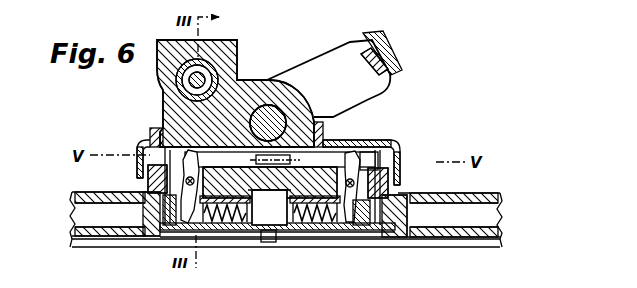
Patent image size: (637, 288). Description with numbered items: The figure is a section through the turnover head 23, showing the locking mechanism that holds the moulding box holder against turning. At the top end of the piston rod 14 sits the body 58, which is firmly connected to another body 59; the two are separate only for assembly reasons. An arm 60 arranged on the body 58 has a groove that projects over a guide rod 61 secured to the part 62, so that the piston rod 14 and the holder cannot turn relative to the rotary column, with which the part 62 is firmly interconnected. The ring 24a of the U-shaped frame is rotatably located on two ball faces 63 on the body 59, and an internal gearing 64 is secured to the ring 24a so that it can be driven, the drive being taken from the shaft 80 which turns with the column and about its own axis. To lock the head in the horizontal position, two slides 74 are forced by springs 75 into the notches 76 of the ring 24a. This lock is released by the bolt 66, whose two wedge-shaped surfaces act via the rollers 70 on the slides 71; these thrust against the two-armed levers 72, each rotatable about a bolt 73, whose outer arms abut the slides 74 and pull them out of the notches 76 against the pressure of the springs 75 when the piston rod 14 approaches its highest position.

The piston rod 14 is at (273, 103).
The turnover head 23 is at (386, 140).
The ring 24a is at (470, 191).
The body 58 is at (312, 98).
The body 59 is at (222, 233).
The arm 60 is at (303, 62).
The guide rod 61 is at (366, 55).
The part 62 is at (374, 33).
The ball faces 63 is at (165, 196).
The internal gearing 64 is at (147, 188).
The bolt 66 is at (291, 159).
The rollers 70 is at (256, 158).
The slides 71 is at (348, 141).
The two-armed levers 72 is at (392, 151).
The bolt 73 is at (362, 158).
The slides 74 is at (236, 230).
The springs 75 is at (305, 232).
The notches 76 is at (385, 200).
The shaft 80 is at (208, 77).